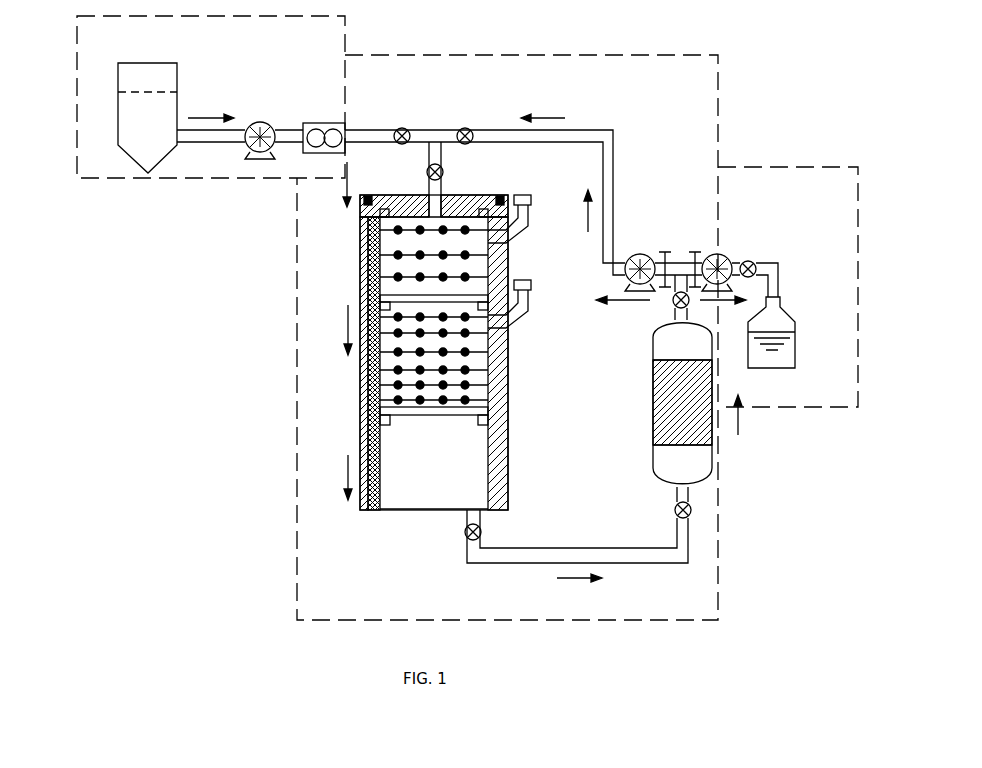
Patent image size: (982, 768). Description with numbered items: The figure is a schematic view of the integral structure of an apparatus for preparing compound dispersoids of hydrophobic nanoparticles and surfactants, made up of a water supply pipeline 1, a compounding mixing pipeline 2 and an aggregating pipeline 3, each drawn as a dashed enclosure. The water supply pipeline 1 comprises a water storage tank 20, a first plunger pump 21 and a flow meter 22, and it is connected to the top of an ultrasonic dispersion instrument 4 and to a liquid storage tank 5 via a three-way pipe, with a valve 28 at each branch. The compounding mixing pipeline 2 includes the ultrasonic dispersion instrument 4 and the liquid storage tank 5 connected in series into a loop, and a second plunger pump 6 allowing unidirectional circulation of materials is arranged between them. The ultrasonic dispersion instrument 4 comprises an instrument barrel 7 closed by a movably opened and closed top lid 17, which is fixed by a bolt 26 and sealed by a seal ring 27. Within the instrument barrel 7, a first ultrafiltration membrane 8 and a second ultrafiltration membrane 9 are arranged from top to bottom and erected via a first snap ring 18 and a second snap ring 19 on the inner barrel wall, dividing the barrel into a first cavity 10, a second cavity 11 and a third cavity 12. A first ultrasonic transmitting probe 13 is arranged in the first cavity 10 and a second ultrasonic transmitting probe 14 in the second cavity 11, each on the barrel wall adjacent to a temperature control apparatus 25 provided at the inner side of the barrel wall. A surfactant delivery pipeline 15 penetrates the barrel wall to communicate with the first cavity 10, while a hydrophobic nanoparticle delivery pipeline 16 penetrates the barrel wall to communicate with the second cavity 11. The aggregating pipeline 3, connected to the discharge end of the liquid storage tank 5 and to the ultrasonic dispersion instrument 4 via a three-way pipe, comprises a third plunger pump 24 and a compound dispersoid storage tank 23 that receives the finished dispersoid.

The water supply pipeline 1 is at (77, 68).
The compounding mixing pipeline 2 is at (453, 55).
The aggregating pipeline 3 is at (745, 167).
The ultrasonic dispersion instrument 4 is at (435, 512).
The liquid storage tank 5 is at (715, 460).
The second plunger pump 6 is at (640, 254).
The instrument barrel 7 is at (360, 438).
The first ultrafiltration membrane 8 is at (380, 257).
The second ultrafiltration membrane 9 is at (380, 371).
The first cavity 10 is at (434, 272).
The second cavity 11 is at (434, 380).
The third cavity 12 is at (434, 471).
The first ultrasonic transmitting probe 13 is at (380, 232).
The second ultrasonic transmitting probe 14 is at (380, 335).
The surfactant delivery pipeline 15 is at (518, 238).
The hydrophobic nanoparticle delivery pipeline 16 is at (518, 322).
The top lid 17 is at (447, 194).
The first snap ring 18 is at (380, 279).
The second snap ring 19 is at (380, 398).
The water storage tank 20 is at (148, 63).
The first plunger pump 21 is at (248, 126).
The flow meter 22 is at (318, 123).
The compound dispersoid storage tank 23 is at (796, 352).
The third plunger pump 24 is at (720, 254).
The temperature control apparatus 25 is at (360, 220).
The bolt 26 is at (370, 197).
The seal ring 27 is at (386, 202).
The valve 28 is at (397, 130).